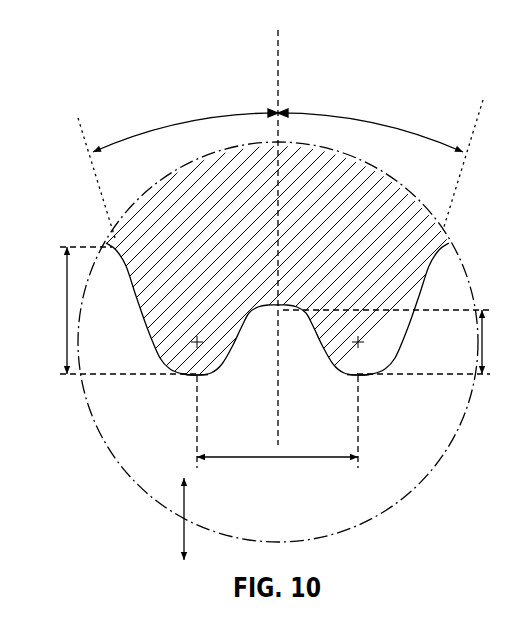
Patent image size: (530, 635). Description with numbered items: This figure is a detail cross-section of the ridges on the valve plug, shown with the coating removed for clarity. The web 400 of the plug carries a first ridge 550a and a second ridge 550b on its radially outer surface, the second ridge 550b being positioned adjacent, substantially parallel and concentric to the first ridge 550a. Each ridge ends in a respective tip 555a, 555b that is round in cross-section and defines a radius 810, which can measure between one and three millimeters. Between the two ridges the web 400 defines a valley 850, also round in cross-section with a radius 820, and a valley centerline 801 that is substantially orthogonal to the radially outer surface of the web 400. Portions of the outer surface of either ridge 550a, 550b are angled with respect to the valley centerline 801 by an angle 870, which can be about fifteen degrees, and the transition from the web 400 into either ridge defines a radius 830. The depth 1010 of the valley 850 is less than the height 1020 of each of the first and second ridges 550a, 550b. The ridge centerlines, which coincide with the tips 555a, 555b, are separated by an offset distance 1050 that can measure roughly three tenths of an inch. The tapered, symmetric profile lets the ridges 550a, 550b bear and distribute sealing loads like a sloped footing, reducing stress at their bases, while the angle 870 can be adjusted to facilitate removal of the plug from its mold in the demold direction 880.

The web 400 is at (183, 186).
The valley centerline 801 is at (279, 56).
The angle 870 is at (165, 126).
The radius 830 is at (122, 263).
The radius 810 is at (159, 364).
The radius 820 is at (253, 310).
The valley 850 is at (282, 313).
The first ridge 550a is at (138, 302).
The second ridge 550b is at (327, 359).
The tip 555a is at (203, 376).
The tip 555b is at (366, 377).
The height 1020 is at (104, 310).
The depth 1010 is at (485, 360).
The offset distance 1050 is at (279, 461).
The demold direction 880 is at (183, 532).